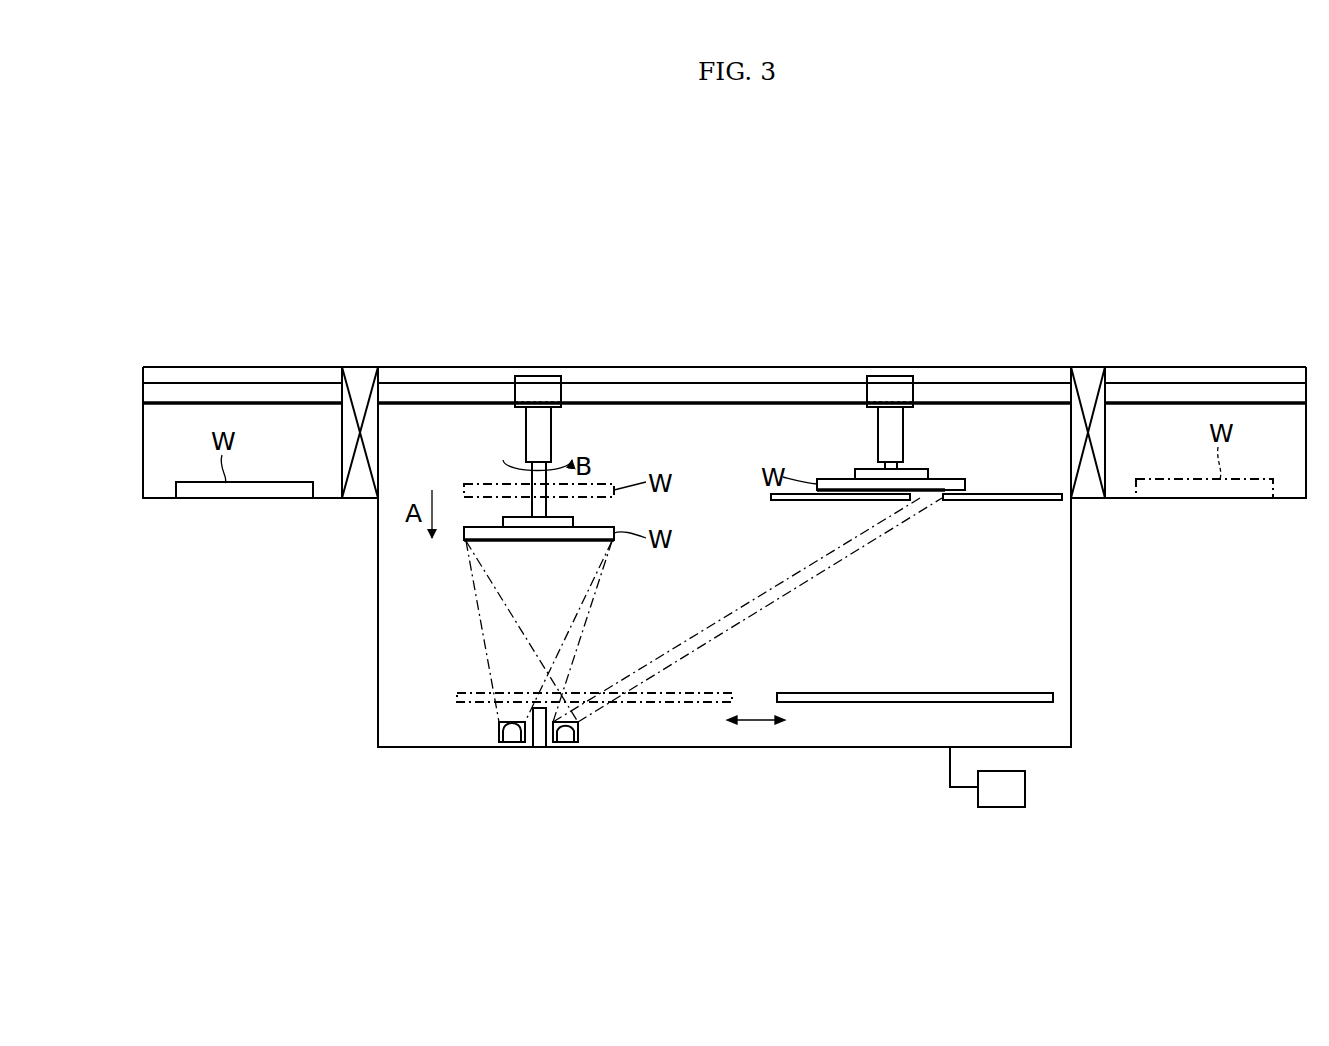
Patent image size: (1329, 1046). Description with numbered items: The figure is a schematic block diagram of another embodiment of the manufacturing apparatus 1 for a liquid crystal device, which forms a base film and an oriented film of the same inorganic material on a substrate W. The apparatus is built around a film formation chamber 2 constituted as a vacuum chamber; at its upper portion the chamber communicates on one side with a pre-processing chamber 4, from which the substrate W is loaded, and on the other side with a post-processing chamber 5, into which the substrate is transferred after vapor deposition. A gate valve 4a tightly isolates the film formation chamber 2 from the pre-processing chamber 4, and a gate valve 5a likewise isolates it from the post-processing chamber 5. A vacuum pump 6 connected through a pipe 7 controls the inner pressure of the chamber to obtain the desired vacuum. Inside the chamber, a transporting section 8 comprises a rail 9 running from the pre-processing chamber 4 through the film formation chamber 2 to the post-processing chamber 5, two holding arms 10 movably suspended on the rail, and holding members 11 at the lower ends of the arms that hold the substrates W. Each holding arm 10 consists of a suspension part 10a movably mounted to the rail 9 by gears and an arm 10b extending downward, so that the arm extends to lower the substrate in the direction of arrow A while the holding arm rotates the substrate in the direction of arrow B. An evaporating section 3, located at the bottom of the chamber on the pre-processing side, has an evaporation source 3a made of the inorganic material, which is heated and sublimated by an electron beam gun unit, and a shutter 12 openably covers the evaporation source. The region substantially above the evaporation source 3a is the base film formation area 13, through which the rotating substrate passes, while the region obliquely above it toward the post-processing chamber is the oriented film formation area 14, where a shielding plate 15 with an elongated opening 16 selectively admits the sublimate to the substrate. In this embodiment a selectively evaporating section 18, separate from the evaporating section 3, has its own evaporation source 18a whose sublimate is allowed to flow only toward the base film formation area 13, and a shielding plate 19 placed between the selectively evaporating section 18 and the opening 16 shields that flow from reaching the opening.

The manufacturing apparatus 1 is at (714, 323).
The film formation chamber 2 is at (378, 670).
The evaporating section 3 is at (610, 766).
The evaporation source 3a is at (592, 731).
The pre-processing chamber 4 is at (160, 499).
The gate valve 4a is at (358, 490).
The post-processing chamber 5 is at (1126, 499).
The gate valve 5a is at (1086, 489).
The vacuum pump 6 is at (1017, 795).
The pipe 7 is at (960, 790).
The transporting section 8 is at (508, 421).
The rail 9 is at (706, 391).
The holding arm 10 is at (751, 379).
The suspension part 10a is at (546, 385).
The arm 10b is at (549, 432).
The holding member 11 is at (574, 522).
The shutter 12 is at (716, 692).
The base film formation area 13 is at (506, 586).
The oriented film formation area 14 is at (962, 461).
The shielding plate 15 is at (1028, 502).
The opening 16 is at (942, 502).
The selectively evaporating section 18 is at (464, 770).
The evaporation source 18a is at (512, 744).
The shielding plate 19 is at (540, 749).